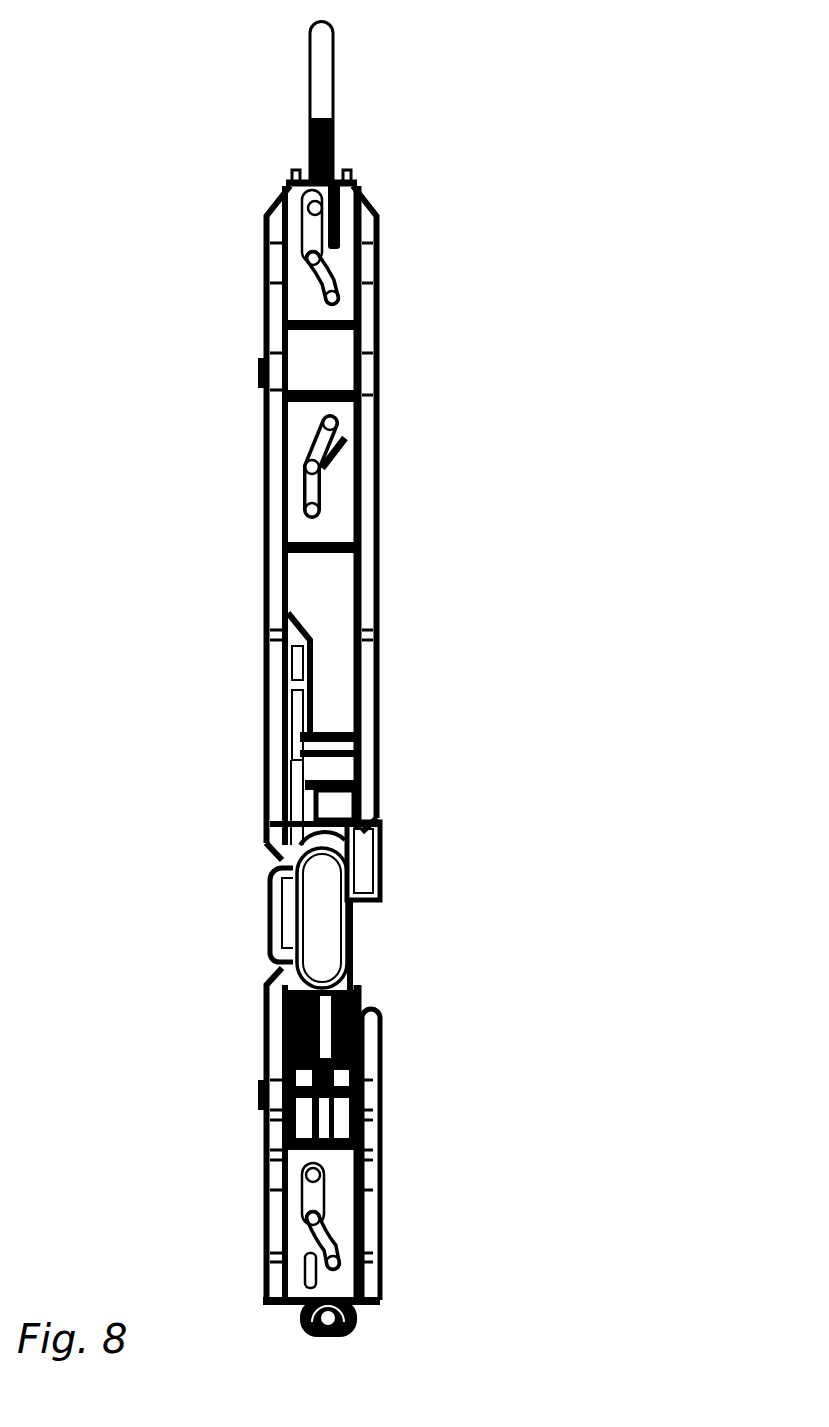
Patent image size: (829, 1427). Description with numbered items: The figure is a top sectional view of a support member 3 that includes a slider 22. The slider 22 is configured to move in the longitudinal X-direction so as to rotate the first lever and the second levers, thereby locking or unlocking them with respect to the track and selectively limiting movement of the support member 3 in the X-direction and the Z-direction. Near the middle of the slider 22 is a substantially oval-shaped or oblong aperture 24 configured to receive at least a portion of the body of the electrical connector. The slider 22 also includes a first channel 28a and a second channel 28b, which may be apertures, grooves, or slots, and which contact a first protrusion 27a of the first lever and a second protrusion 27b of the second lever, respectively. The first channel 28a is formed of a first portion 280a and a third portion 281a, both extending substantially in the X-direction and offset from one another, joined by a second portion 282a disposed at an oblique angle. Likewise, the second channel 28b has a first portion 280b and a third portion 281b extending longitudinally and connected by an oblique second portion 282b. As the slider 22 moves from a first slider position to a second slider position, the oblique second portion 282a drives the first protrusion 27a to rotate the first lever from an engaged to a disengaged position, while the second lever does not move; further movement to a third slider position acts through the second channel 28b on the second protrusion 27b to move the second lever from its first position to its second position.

The support member 3 is at (498, 710).
The slider 22 is at (367, 1040).
The aperture 24 is at (330, 922).
The first protrusion 27a is at (303, 422).
The second protrusion 27b is at (305, 205).
The first channel 28a is at (305, 507).
The second channel 28b is at (317, 287).
The first portion 280a is at (358, 410).
The first portion 280b is at (340, 228).
The third portion 281a is at (327, 490).
The third portion 281b is at (367, 308).
The second portion 282a is at (343, 455).
The second portion 282b is at (343, 258).